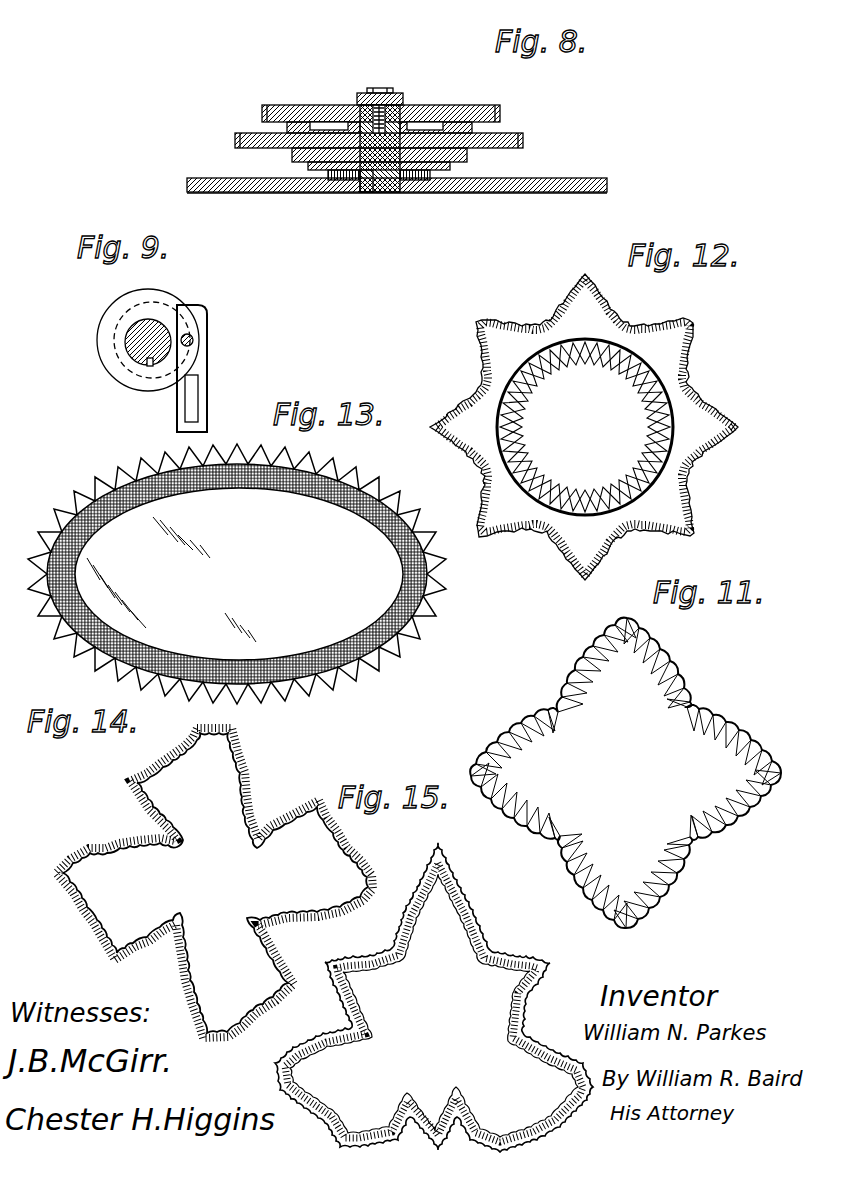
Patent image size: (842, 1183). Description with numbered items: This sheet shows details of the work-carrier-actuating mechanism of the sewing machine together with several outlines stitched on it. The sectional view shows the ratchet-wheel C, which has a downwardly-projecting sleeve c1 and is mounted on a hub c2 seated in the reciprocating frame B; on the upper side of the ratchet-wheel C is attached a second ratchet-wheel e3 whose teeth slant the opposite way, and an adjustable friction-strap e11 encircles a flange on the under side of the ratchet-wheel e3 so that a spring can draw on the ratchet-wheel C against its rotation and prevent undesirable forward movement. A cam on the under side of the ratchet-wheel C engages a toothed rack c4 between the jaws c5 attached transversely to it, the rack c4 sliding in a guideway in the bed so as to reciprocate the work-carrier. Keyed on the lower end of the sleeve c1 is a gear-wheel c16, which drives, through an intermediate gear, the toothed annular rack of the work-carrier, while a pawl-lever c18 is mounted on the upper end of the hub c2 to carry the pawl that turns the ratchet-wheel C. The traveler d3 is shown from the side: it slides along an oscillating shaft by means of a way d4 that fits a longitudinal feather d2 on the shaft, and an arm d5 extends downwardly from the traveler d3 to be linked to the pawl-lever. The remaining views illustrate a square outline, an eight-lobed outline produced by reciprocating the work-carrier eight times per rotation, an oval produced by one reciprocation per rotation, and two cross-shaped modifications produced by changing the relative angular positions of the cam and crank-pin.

In FIG. 8, the frame B is at (518, 188).
In FIG. 8, the ratchet-wheel C is at (523, 140).
In FIG. 8, the sleeve c1 is at (357, 170).
In FIG. 8, the hub c2 is at (385, 185).
In FIG. 8, the toothed rack c4 is at (430, 170).
In FIG. 8, the jaws c5 is at (467, 158).
In FIG. 8, the gear-wheel c16 is at (328, 175).
In FIG. 8, the pawl-lever c18 is at (400, 100).
In FIG. 8, the ratchet-wheel e3 is at (473, 107).
In FIG. 8, the adjustable friction-strap e11 is at (473, 128).
In FIG. 9, the feather d2 is at (148, 362).
In FIG. 9, the traveler d3 is at (107, 330).
In FIG. 9, the way d4 is at (150, 368).
In FIG. 9, the arm d5 is at (208, 358).